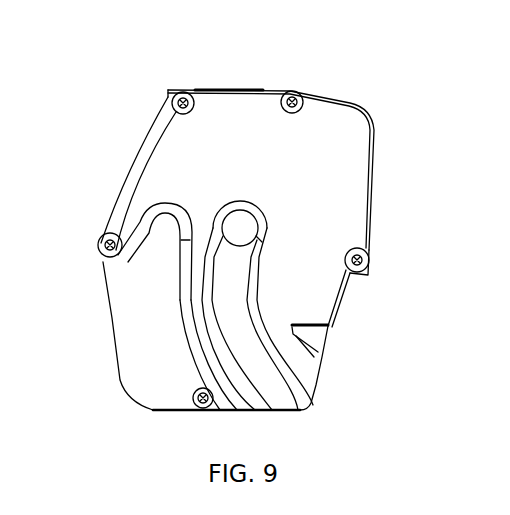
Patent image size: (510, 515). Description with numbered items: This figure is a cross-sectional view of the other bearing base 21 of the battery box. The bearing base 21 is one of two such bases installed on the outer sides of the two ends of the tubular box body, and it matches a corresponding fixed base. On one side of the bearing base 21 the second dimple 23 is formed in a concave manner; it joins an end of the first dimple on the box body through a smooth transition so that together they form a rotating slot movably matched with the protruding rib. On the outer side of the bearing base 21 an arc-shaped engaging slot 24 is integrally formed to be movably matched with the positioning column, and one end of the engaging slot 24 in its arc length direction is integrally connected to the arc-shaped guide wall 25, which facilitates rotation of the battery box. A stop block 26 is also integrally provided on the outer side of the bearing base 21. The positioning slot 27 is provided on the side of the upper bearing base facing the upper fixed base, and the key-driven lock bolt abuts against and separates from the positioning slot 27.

The bearing base 21 is at (342, 173).
The second dimple 23 is at (350, 277).
The engaging slot 24 is at (167, 233).
The arc-shaped guide wall 25 is at (185, 338).
The stop block 26 is at (312, 338).
The positioning slot 27 is at (238, 228).